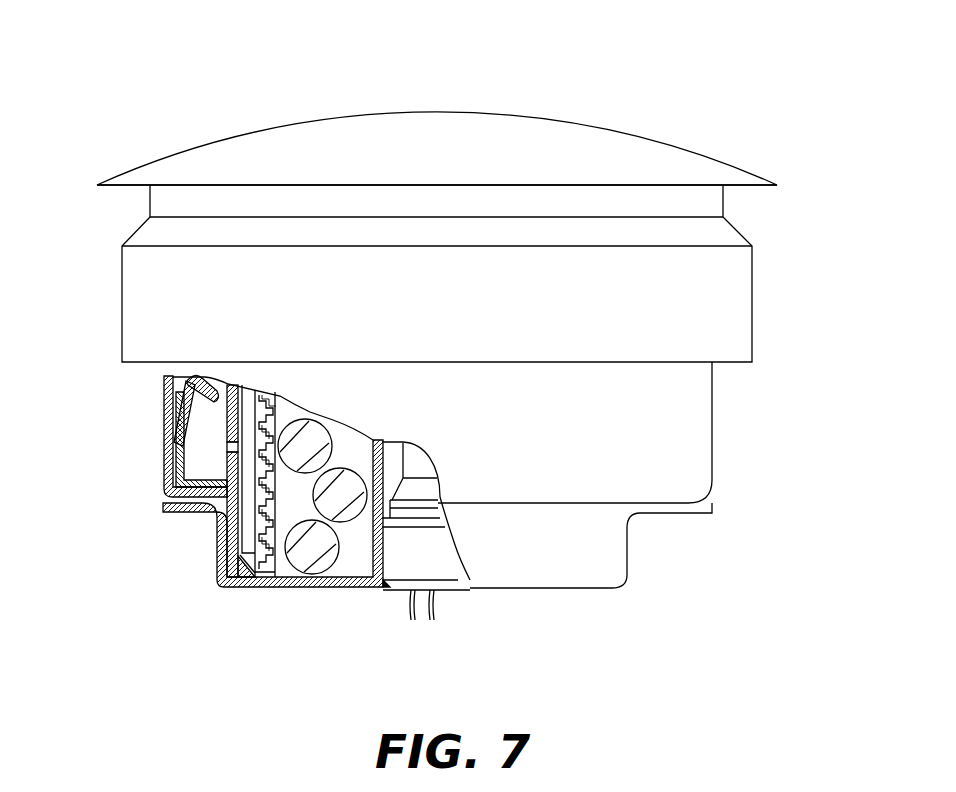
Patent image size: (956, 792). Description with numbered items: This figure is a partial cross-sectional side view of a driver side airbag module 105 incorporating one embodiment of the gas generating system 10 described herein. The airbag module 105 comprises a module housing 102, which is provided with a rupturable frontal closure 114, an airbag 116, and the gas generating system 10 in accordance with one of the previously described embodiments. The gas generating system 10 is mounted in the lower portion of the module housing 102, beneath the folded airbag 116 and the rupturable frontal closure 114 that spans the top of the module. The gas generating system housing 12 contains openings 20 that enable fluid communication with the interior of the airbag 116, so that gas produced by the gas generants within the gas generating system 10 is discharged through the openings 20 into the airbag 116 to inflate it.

The rupturable frontal closure 114 is at (472, 113).
The driver side airbag module 105 is at (725, 134).
The module housing 102 is at (662, 307).
The airbag 116 is at (168, 396).
The gas generating system housing 12 is at (227, 422).
The openings 20 is at (227, 451).
The gas generating system 10 is at (302, 588).